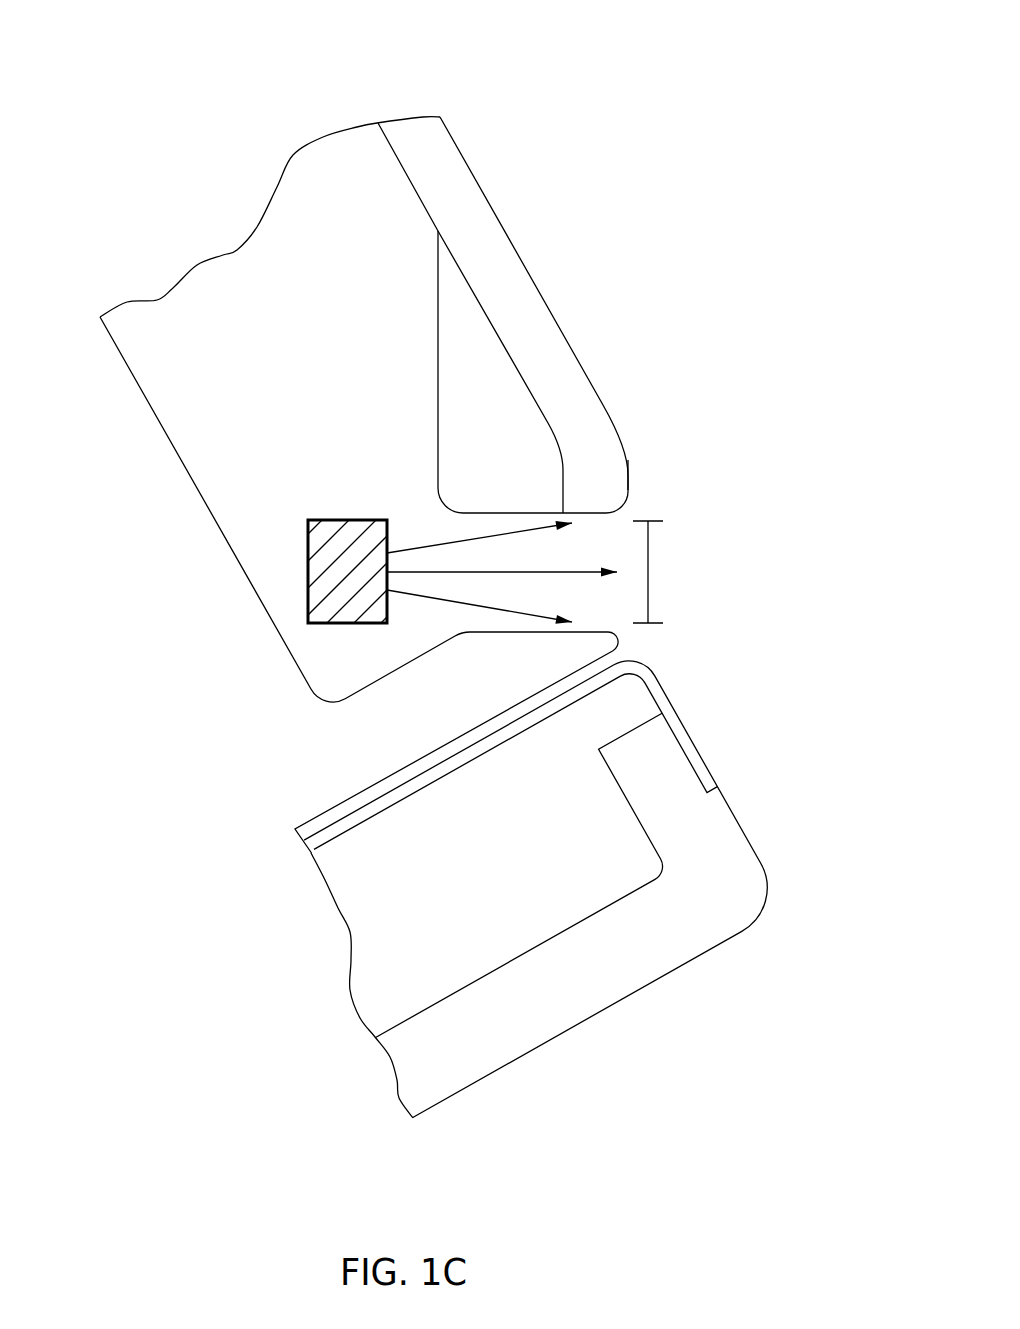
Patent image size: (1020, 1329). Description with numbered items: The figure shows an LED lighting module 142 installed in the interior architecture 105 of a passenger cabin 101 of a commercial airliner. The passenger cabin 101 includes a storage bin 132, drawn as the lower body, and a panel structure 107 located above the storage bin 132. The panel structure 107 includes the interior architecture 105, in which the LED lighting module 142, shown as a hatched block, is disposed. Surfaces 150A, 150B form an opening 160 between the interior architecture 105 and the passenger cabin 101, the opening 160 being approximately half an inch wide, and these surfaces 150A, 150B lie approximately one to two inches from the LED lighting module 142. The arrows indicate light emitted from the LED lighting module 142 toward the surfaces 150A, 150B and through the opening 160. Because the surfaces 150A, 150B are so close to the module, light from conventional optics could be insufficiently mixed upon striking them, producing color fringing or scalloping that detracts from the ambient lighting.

The passenger cabin 101 is at (582, 117).
The interior architecture 105 is at (372, 353).
The panel structure 107 is at (503, 273).
The LED lighting module 142 is at (358, 520).
The surface 150A is at (587, 513).
The surface 150B is at (587, 632).
The opening 160 is at (648, 550).
The storage bin 132 is at (615, 1007).